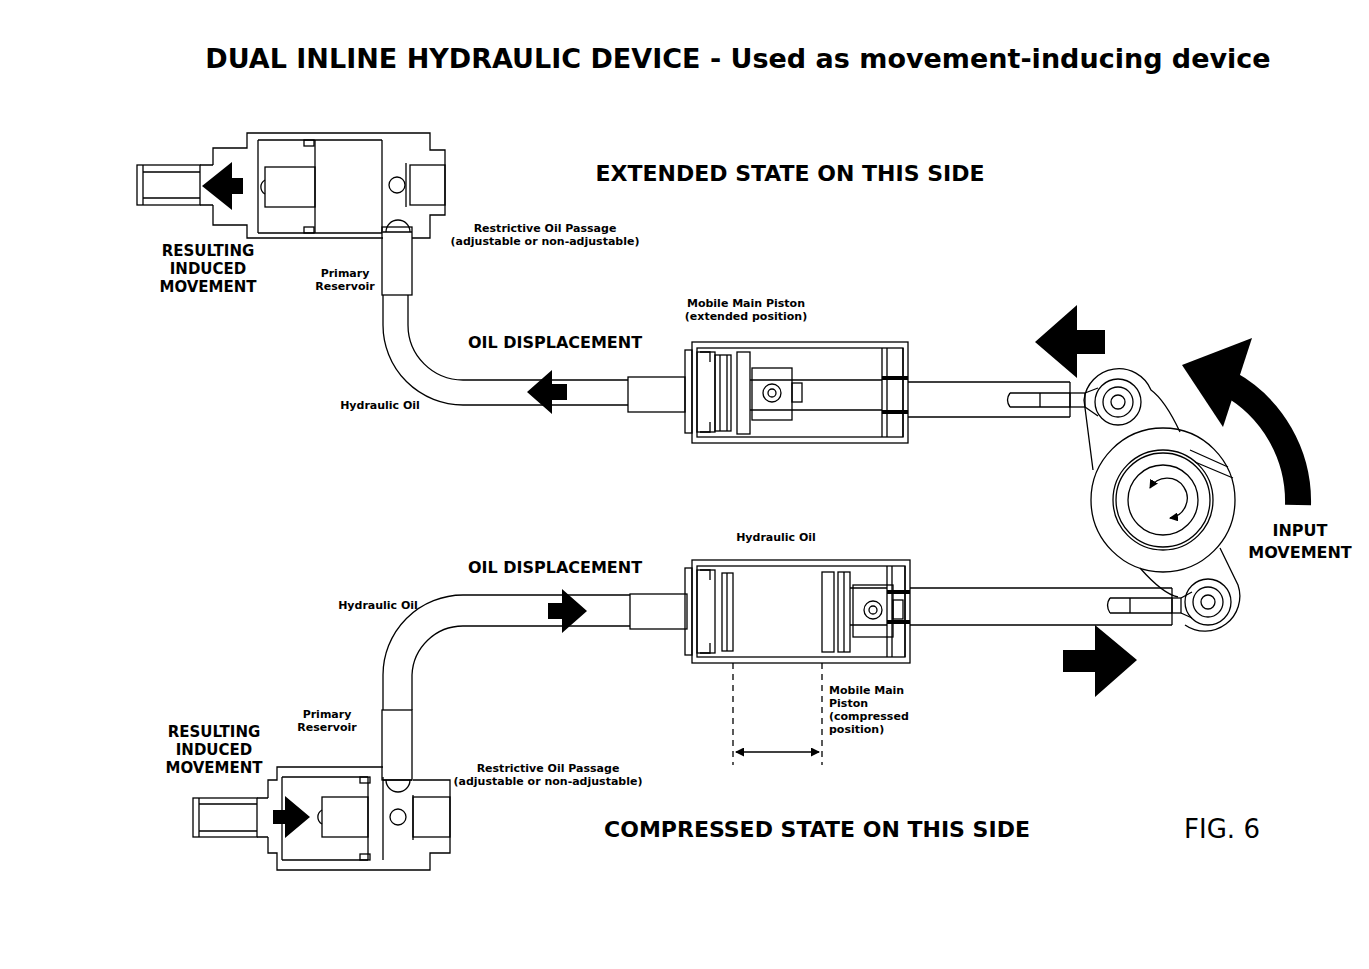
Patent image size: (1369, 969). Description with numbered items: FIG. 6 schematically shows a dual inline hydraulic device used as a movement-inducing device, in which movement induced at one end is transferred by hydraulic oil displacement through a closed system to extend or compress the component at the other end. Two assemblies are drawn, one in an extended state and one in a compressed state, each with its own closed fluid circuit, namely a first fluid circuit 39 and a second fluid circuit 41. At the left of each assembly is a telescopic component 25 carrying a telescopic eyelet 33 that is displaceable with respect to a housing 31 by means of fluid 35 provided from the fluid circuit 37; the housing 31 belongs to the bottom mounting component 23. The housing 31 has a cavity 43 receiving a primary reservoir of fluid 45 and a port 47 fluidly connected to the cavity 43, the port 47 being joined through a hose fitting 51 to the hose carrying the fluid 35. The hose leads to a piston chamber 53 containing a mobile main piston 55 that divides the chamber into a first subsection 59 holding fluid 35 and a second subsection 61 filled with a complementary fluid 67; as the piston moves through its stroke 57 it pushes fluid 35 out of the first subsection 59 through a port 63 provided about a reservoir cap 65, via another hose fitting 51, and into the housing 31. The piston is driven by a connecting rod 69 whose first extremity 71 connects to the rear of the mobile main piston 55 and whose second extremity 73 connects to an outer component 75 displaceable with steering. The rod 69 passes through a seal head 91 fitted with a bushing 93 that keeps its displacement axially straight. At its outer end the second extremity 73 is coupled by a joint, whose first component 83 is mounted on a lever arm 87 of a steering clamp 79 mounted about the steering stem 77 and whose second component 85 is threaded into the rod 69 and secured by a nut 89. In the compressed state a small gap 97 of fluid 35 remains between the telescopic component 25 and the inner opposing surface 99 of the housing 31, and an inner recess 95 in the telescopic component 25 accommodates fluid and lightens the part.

The bottom mounting component 23 is at (465, 131).
The telescopic component 25 is at (203, 153).
The telescopic eyelet 33 is at (261, 847).
The housing 31 is at (384, 127).
The fluid 35 is at (338, 198).
The fluid circuit 37 is at (439, 410).
The first fluid circuit 39 is at (845, 307).
The second fluid circuit 41 is at (680, 678).
The cavity 43 is at (326, 224).
The primary reservoir of fluid 45 is at (334, 161).
The port 47 is at (419, 222).
The hose fitting 51 is at (414, 277).
The piston chamber 53 is at (879, 340).
The mobile main piston 55 is at (813, 506).
The stroke of mobile main piston 57 is at (783, 755).
The first subsection 59 is at (809, 580).
The second subsection 61 is at (812, 424).
The port 63 is at (685, 391).
The reservoir cap 65 is at (706, 366).
The complementary fluid 67 is at (841, 375).
The connecting rod 69 is at (981, 378).
The first extremity 71 is at (798, 370).
The second extremity 73 is at (1053, 426).
The outer component 75 is at (1123, 313).
The steering stem 77 is at (1191, 521).
The steering clamp 79 is at (1108, 554).
The first component 83 is at (1121, 379).
The second component 85 is at (1050, 392).
The lever arm 87 is at (1136, 366).
The nut 89 is at (1078, 413).
The seal head 91 is at (913, 358).
The bushing 93 is at (914, 415).
The inner recess 95 is at (284, 181).
The gap for fluid 97 is at (378, 850).
The inner opposing surface 99 is at (377, 164).